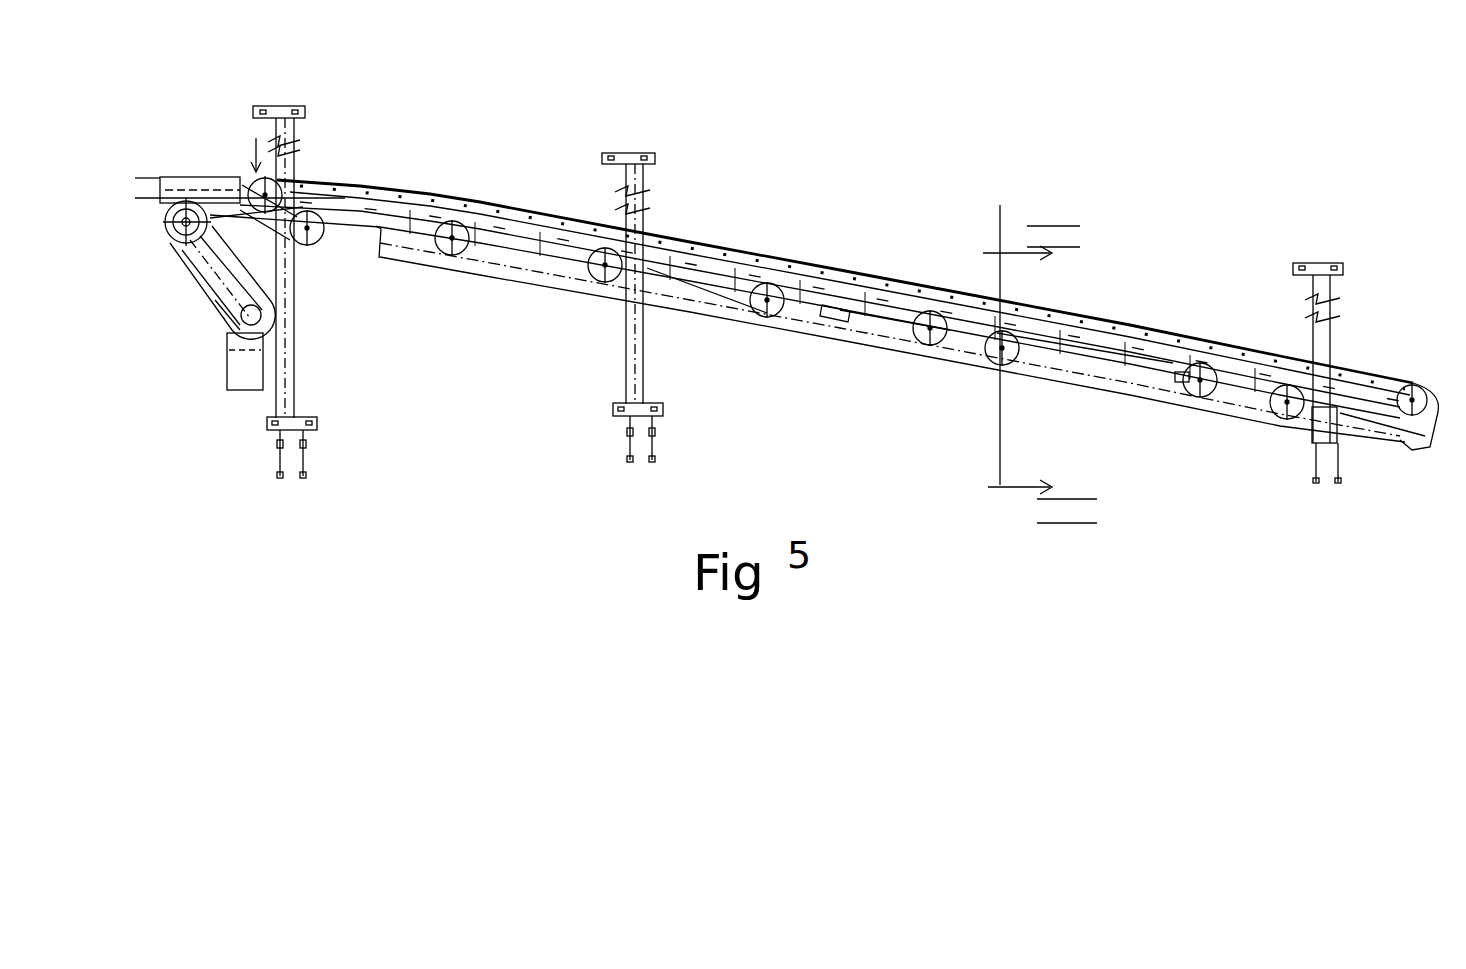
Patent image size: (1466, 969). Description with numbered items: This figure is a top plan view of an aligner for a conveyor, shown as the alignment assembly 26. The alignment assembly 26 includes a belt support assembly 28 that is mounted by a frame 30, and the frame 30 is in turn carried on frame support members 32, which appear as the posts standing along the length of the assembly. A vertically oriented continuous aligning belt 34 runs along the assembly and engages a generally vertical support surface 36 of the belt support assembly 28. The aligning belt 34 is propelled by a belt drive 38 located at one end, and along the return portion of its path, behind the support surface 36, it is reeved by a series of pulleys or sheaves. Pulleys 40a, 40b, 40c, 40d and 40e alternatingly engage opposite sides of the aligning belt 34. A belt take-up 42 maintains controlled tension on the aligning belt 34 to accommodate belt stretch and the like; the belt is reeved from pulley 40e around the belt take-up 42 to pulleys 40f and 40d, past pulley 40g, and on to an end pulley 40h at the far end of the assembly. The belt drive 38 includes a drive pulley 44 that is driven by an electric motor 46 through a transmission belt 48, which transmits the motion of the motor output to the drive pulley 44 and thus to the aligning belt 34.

The alignment assembly 26 is at (1034, 175).
The belt support assembly 28 is at (855, 350).
The frame 30 is at (712, 318).
The frame support members 32 is at (300, 372).
The aligning belt 34 is at (335, 185).
The support surface 36 is at (510, 205).
The belt drive 38 is at (185, 204).
The pulley 40a is at (305, 246).
The pulley 40b is at (463, 258).
The pulley 40c is at (606, 283).
The pulley 40d is at (770, 283).
The pulley 40e is at (934, 345).
The pulley 40f is at (1010, 366).
The pulley 40g is at (1285, 422).
The end pulley 40h is at (1411, 418).
The belt take-up 42 is at (1195, 364).
The drive pulley 44 is at (183, 248).
The electric motor 46 is at (227, 383).
The transmission belt 48 is at (215, 300).